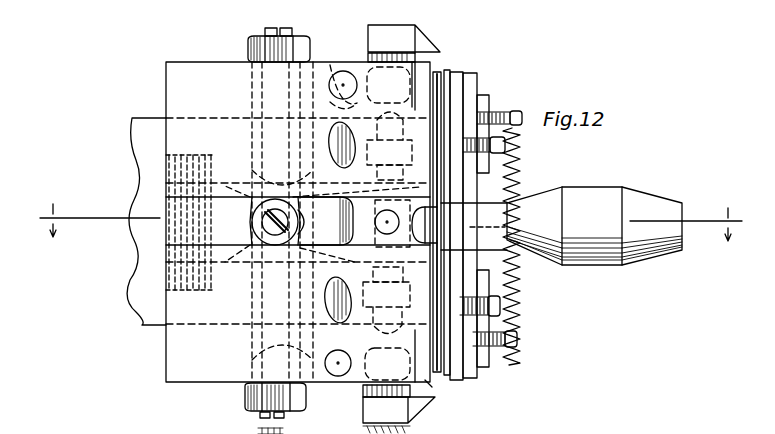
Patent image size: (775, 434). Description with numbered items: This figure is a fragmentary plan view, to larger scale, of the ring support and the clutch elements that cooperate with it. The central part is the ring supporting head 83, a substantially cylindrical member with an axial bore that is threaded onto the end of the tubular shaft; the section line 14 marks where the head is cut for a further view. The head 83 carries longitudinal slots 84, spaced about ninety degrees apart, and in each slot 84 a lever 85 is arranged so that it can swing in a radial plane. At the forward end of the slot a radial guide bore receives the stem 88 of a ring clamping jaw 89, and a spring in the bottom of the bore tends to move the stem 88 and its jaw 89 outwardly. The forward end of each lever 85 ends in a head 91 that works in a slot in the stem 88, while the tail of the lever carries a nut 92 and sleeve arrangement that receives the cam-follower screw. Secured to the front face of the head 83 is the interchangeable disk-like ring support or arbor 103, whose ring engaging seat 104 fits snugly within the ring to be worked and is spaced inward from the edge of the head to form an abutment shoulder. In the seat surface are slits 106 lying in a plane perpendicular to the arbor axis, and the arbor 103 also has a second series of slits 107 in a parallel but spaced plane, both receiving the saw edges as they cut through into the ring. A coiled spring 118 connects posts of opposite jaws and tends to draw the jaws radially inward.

The section line 14- 14 is at (391, 211).
The ring supporting head 83 is at (182, 79).
The slot 84 is at (232, 240).
The lever 85 is at (379, 229).
The stem 88 is at (410, 433).
The ring clamping jaw 89 is at (440, 433).
The head 91 is at (353, 433).
The lock washer 92 is at (303, 421).
The ring support or arbor 103 is at (442, 118).
The ring engaging seat 104 is at (428, 380).
The slits 106 is at (437, 75).
The second series of slits 107 is at (448, 78).
The coiled spring 118 is at (515, 170).